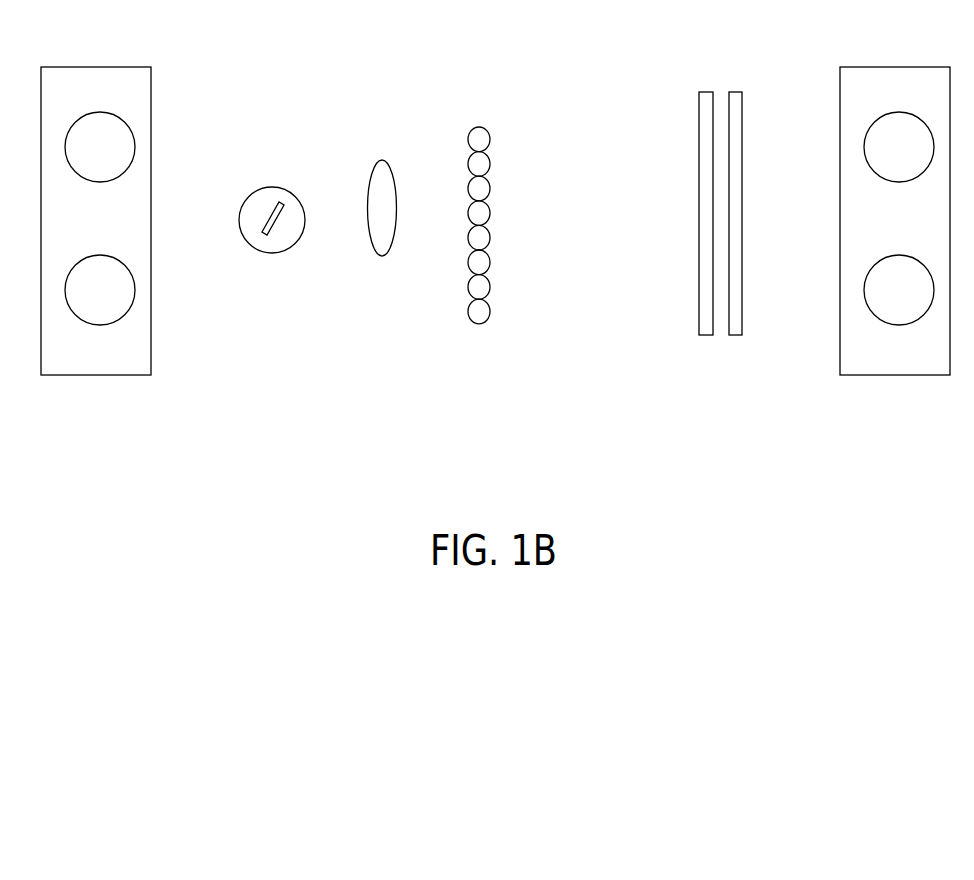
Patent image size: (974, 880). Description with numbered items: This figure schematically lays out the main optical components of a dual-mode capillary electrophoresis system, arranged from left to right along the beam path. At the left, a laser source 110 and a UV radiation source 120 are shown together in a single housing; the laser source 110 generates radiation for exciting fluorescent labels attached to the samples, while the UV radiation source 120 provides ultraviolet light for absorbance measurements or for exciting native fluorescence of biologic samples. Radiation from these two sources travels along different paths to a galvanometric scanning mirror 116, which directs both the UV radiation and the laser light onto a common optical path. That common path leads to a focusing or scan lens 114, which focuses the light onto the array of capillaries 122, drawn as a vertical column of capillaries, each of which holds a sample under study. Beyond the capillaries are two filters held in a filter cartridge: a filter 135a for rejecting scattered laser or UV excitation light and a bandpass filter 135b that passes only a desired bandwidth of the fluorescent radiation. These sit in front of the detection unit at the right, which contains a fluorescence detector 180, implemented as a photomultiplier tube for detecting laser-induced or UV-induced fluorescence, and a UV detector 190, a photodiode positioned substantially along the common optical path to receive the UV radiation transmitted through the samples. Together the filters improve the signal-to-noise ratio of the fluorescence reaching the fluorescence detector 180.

The laser source 110 is at (113, 161).
The UV radiation source 120 is at (113, 304).
The galvanometric scanning mirror 116 is at (272, 187).
The focusing or scan lens 114 is at (383, 160).
The array of capillaries 122 is at (480, 126).
The filter 135a is at (705, 91).
The bandpass filter 135b is at (736, 91).
The fluorescence detector 180 is at (912, 161).
The UV detector 190 is at (912, 304).